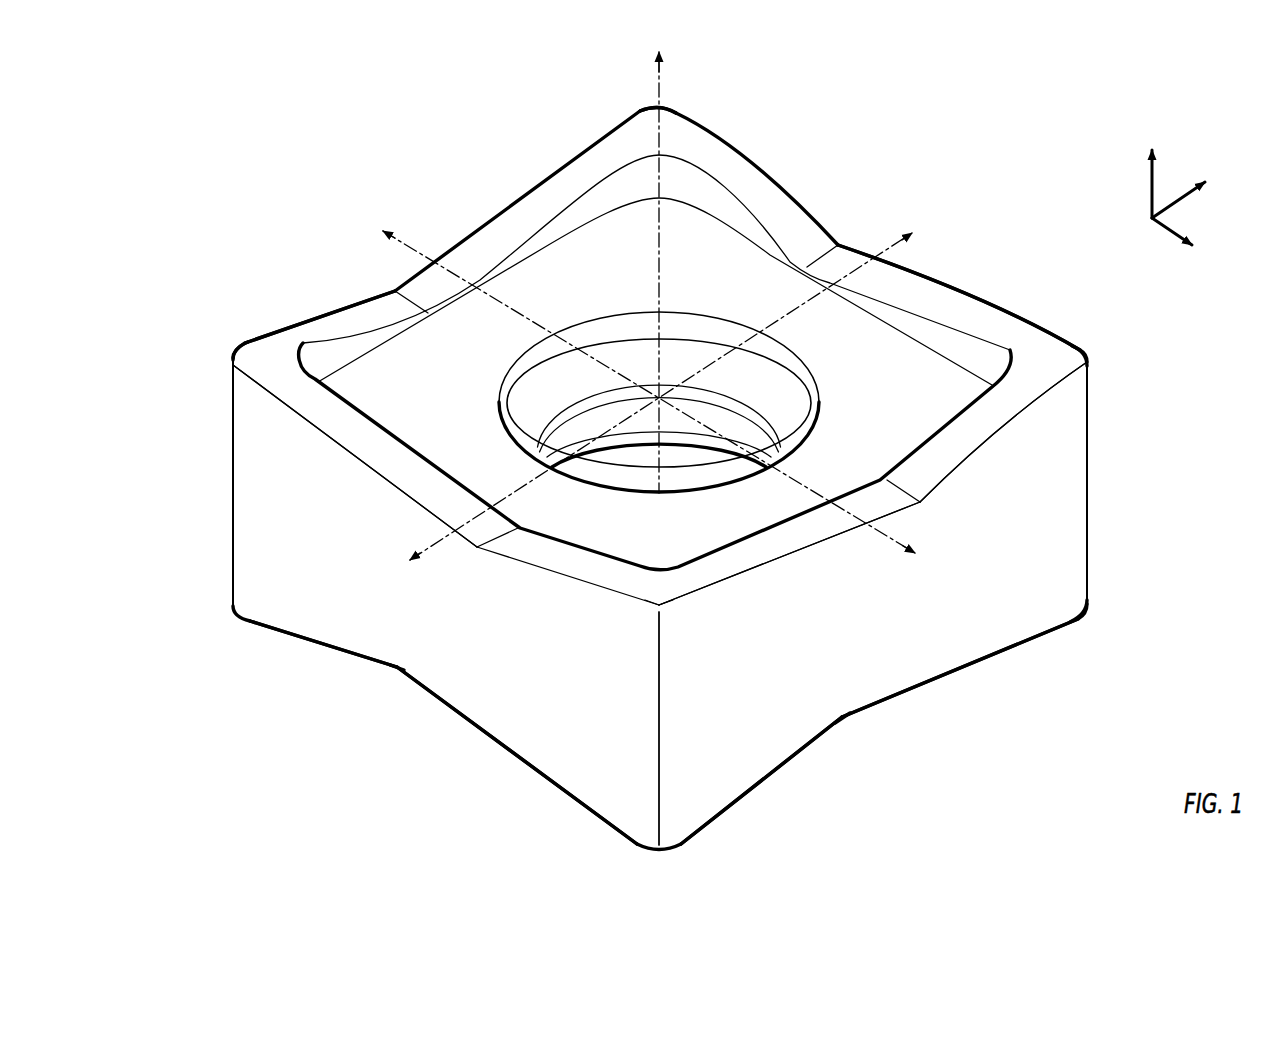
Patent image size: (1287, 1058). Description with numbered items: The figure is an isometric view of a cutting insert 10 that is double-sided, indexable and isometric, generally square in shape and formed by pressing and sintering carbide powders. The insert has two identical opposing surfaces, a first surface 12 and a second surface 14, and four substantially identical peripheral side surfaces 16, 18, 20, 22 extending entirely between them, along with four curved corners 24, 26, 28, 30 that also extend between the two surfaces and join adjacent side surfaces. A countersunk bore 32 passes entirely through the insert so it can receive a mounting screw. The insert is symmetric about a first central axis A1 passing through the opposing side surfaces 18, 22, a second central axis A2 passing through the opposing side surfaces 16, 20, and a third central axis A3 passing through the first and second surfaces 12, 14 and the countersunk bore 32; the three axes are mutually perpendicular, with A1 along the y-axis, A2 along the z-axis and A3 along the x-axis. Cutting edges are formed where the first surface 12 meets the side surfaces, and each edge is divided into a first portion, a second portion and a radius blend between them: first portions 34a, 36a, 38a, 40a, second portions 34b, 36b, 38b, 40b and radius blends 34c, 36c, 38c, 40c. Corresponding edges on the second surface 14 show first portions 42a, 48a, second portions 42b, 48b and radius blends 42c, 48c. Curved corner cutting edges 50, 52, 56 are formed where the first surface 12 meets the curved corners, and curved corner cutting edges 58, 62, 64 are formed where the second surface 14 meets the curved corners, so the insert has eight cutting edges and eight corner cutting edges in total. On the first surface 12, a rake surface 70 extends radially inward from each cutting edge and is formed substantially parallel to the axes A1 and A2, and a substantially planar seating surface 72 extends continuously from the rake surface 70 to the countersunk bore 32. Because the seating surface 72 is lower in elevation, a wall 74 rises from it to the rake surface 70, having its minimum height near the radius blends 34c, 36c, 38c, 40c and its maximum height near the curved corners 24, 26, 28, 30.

The cutting insert 10 is at (202, 142).
The first surface 12 is at (736, 276).
The second surface 14 is at (816, 789).
The peripheral side surface 16 is at (906, 625).
The peripheral side surface 18 is at (976, 273).
The peripheral side surface 20 is at (315, 282).
The peripheral side surface 22 is at (488, 655).
The curved corner 24 is at (1105, 447).
The curved corner 26 is at (676, 106).
The curved corner 28 is at (212, 448).
The curved corner 30 is at (664, 796).
The countersunk bore 32 is at (760, 390).
The first portion 34a is at (780, 561).
The second portion 34b is at (1005, 431).
The radius blend 34c is at (921, 503).
The first portion 36a is at (1040, 320).
The second portion 36b is at (742, 148).
The radius blend 36c is at (841, 246).
The first portion 38a is at (533, 188).
The second portion 38b is at (288, 320).
The radius blend 38c is at (393, 292).
The first portion 40a is at (318, 433).
The second portion 40b is at (572, 578).
The radius blend 40c is at (477, 549).
The first portion 42a is at (1023, 645).
The second portion 42b is at (749, 803).
The radius blend 42c is at (844, 721).
The first portion 48a is at (513, 762).
The second portion 48b is at (298, 645).
The radius blend 48c is at (396, 670).
The corner cutting edge 50 is at (1088, 350).
The corner cutting edge 52 is at (655, 105).
The corner cutting edge 56 is at (661, 614).
The corner cutting edge 58 is at (1088, 612).
The corner cutting edge 62 is at (232, 614).
The corner cutting edge 64 is at (658, 855).
The rake surface 70 is at (480, 252).
The seating surface 72 is at (947, 393).
The wall 74 is at (592, 207).
The first central axis A1 is at (677, 386).
The second central axis A2 is at (632, 378).
The third central axis A3 is at (677, 268).